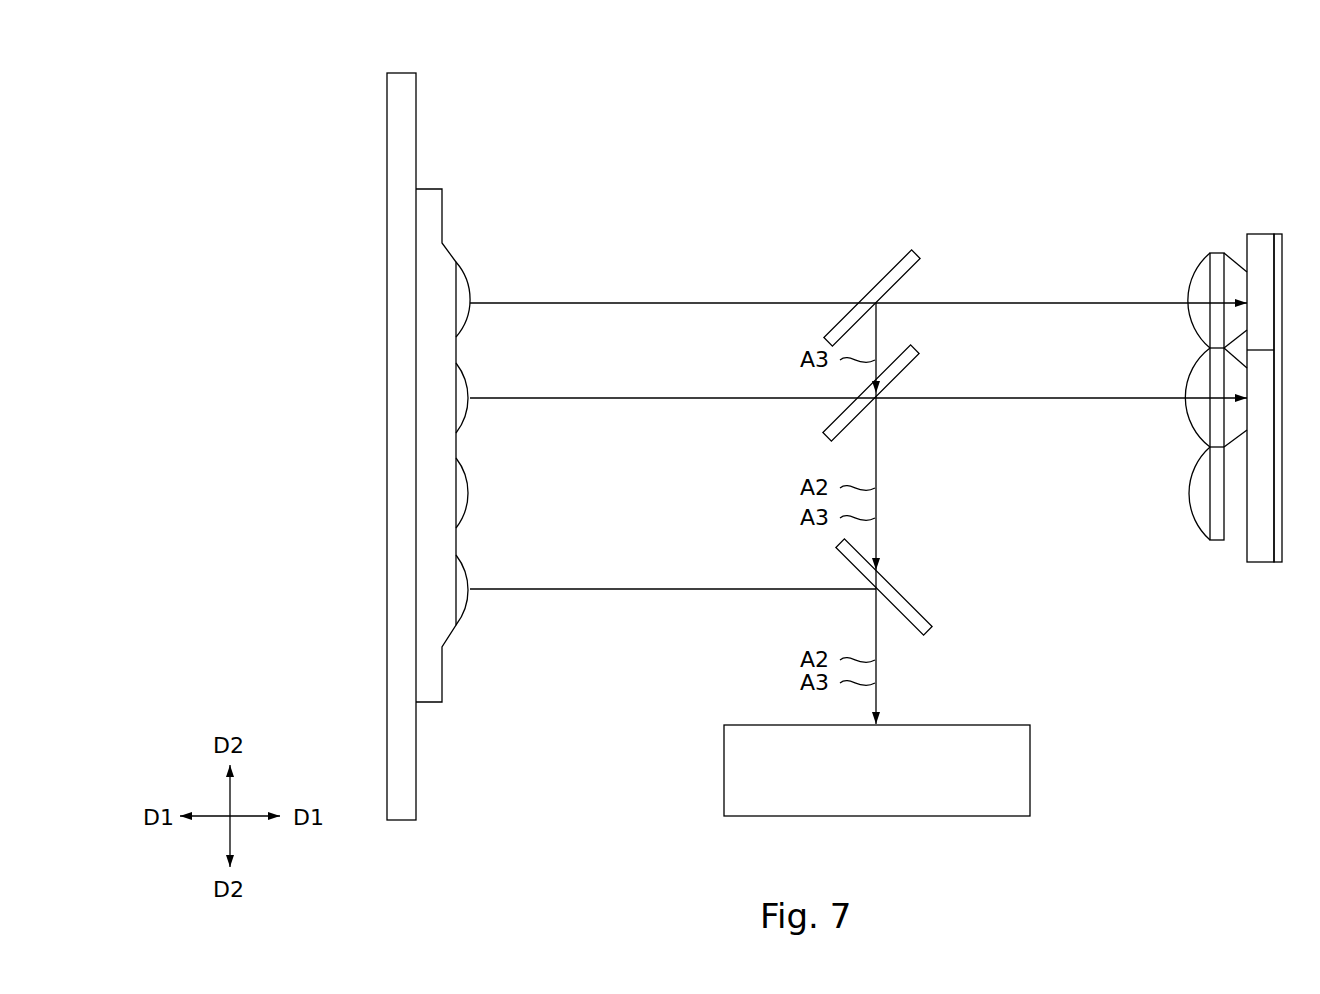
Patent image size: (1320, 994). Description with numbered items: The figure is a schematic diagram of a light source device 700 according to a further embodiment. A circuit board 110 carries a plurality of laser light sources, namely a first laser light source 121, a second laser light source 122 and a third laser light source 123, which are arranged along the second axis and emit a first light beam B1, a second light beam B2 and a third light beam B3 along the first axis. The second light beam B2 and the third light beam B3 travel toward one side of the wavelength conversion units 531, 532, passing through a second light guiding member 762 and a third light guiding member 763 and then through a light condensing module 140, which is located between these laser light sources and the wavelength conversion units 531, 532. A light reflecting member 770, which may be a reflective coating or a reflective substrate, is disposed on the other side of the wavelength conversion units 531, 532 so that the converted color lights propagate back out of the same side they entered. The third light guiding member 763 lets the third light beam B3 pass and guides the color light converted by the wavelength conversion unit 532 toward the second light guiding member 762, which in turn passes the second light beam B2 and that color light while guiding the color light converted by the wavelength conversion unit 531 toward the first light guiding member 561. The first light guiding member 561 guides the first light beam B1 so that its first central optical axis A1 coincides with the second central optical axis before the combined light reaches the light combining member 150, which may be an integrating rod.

The light source device 700 is at (285, 41).
The circuit board 110 is at (400, 73).
The first laser light source 121 is at (466, 605).
The second laser light source 122 is at (466, 414).
The third laser light source 123 is at (466, 318).
The third light guiding member 763 is at (914, 259).
The second light guiding member 762 is at (914, 352).
The first light guiding member 561 is at (913, 607).
The light combining member 150 is at (724, 771).
The light condensing module 140 is at (1218, 253).
The wavelength conversion unit 531 is at (1262, 562).
The wavelength conversion unit 532 is at (1258, 234).
The light reflecting member 770 is at (1278, 234).
The first light beam B1 is at (652, 588).
The second light beam B2 is at (652, 396).
The third light beam B3 is at (652, 301).
The first central optical axis A1 is at (875, 631).